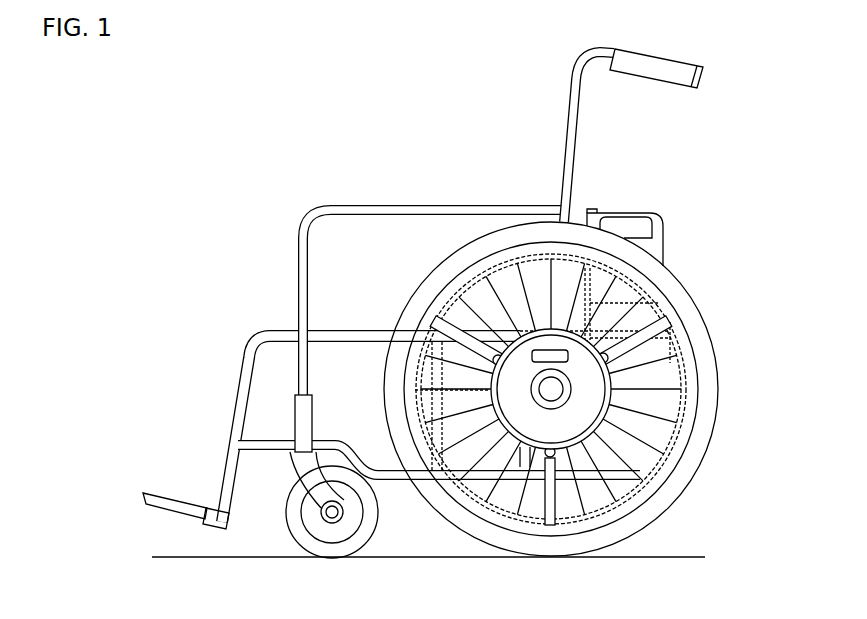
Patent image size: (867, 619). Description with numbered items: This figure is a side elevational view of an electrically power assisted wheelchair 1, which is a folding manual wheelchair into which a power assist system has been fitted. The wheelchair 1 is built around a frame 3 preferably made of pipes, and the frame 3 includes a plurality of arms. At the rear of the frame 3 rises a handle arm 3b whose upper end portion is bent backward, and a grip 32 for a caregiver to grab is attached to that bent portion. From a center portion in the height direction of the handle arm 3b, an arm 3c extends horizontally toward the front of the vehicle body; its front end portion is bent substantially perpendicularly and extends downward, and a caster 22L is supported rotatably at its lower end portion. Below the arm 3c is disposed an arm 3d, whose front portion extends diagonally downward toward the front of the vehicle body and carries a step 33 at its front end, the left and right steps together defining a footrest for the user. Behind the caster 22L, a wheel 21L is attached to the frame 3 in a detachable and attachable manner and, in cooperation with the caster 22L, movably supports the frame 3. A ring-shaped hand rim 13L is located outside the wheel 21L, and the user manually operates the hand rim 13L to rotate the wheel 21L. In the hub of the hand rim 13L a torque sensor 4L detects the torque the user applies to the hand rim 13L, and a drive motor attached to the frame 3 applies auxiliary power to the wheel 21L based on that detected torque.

The electrically power assisted wheelchair 1 is at (727, 156).
The frame 3 is at (409, 200).
The handle arm 3b is at (568, 162).
The arm 3c is at (500, 206).
The arm 3d is at (360, 336).
The torque sensor 4L is at (606, 334).
The hand rim 13L is at (693, 382).
The wheel 21L is at (677, 490).
The caster 22L is at (296, 526).
The grip 32 is at (673, 63).
The step 33 is at (180, 502).